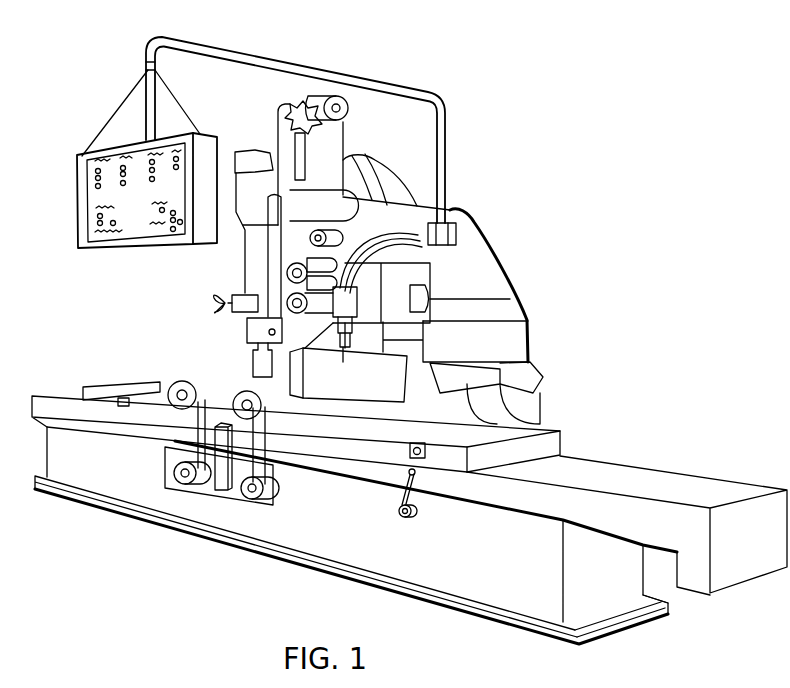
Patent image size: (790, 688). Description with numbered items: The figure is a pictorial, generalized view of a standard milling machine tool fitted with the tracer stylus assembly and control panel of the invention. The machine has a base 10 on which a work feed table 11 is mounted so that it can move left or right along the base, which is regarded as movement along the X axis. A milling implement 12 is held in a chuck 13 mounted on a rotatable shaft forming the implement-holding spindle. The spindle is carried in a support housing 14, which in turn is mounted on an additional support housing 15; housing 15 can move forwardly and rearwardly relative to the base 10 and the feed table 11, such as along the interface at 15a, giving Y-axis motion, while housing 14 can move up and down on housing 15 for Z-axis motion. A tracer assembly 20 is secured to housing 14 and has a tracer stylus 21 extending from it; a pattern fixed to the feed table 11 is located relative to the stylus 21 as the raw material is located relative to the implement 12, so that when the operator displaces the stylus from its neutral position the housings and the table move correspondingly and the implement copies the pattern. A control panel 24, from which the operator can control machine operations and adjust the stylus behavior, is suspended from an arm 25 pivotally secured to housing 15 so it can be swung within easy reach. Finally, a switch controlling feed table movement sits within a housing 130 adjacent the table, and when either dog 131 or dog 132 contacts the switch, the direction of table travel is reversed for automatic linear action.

The base 10 is at (540, 603).
The work feed table 11 is at (500, 430).
The milling implement 12 is at (257, 358).
The chuck 13 is at (252, 335).
The support housing 14 is at (355, 137).
The additional support housing 15 is at (475, 219).
The interface 15a is at (505, 322).
The tracer assembly 20 is at (352, 296).
The tracer stylus 21 is at (338, 357).
The control panel 24 is at (95, 200).
The arm 25 is at (277, 63).
The housing 130 is at (250, 494).
The dog 131 is at (410, 452).
The dog 132 is at (123, 397).